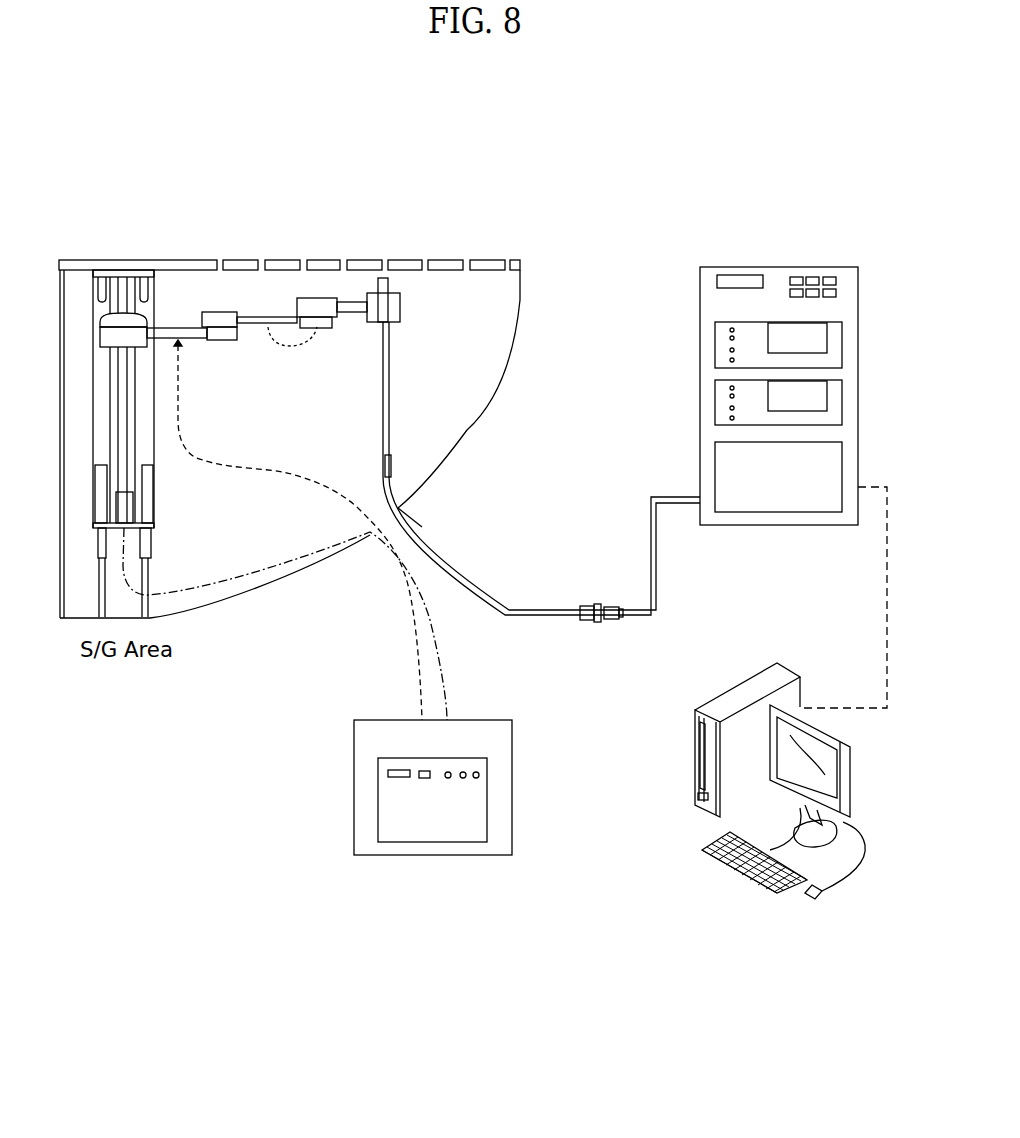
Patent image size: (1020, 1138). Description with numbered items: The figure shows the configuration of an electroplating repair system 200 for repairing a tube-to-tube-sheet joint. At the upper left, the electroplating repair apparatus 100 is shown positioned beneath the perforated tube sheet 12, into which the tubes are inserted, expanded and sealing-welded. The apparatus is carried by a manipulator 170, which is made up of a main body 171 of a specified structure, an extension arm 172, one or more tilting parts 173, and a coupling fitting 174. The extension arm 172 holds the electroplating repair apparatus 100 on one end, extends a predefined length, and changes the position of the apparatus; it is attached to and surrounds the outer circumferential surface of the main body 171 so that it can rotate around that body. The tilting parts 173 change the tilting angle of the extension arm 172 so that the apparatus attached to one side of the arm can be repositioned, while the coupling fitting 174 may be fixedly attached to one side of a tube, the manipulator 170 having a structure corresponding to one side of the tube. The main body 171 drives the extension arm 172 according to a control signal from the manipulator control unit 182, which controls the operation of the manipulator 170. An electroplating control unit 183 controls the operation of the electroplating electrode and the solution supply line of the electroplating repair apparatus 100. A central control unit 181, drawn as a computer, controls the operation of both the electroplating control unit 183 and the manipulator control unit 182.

The electroplating repair system 200 is at (518, 125).
The tube sheet 12 is at (445, 265).
The electroplating repair apparatus 100 is at (400, 307).
The manipulator 170 is at (158, 745).
The main body 171 is at (145, 508).
The extension arm 172 is at (250, 328).
The tilting part 173 is at (217, 312).
The coupling fitting 174 is at (125, 277).
The central control unit 181 is at (695, 773).
The manipulator control unit 182 is at (492, 732).
The electroplating control unit 183 is at (775, 272).